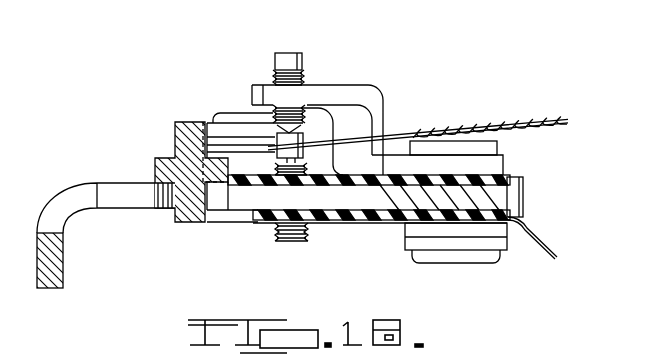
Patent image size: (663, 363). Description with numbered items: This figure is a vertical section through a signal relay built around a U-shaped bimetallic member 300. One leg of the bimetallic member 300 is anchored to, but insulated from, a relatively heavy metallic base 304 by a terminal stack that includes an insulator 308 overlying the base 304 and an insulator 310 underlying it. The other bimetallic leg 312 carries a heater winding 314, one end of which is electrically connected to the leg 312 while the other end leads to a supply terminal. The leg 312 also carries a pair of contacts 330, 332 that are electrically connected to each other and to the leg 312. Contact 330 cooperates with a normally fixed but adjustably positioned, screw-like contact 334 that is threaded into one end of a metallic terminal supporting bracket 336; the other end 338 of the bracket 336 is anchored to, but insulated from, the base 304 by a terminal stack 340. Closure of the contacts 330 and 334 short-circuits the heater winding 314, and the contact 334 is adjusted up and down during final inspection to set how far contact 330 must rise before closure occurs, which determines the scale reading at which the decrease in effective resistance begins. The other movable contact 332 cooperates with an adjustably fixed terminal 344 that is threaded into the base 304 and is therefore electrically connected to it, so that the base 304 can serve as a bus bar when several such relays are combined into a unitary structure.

The bimetallic member 300 is at (369, 159).
The metallic base 304 is at (524, 191).
The insulator 308 is at (506, 172).
The insulator 310 is at (527, 218).
The bimetallic leg 312 is at (393, 138).
The heater winding 314 is at (432, 138).
The contact 330 is at (307, 138).
The contact 332 is at (306, 157).
The adjustably positioned contact 334 is at (308, 124).
The terminal supporting bracket 336 is at (315, 83).
The other end of bracket 338 is at (500, 156).
The terminal stack 340 is at (477, 133).
The adjustably fixed terminal 344 is at (283, 163).